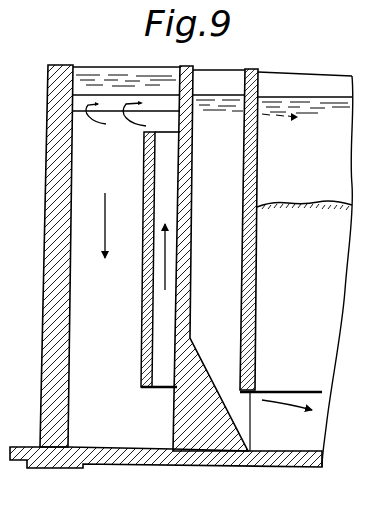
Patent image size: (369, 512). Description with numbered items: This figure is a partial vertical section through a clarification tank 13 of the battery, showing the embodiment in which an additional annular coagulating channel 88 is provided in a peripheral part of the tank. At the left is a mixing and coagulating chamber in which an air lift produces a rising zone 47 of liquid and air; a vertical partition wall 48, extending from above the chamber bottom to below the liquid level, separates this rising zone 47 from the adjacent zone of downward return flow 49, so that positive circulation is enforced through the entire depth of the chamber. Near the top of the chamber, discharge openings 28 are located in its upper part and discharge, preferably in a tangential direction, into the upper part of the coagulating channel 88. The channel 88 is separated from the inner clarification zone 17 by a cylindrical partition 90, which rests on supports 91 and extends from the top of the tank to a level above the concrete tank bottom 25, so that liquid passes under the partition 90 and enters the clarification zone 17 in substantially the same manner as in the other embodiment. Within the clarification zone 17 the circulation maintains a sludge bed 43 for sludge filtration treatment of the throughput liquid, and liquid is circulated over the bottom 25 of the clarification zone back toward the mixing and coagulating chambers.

The clarification tank 13 is at (302, 73).
The discharge openings 28 is at (143, 107).
The sludge bed 43 is at (300, 203).
The annular coagulating channel 88 is at (228, 238).
The cylindrical partition 90 is at (258, 247).
The clarification zone 17 is at (320, 285).
The zone of downward return flow 49 is at (113, 298).
The partition wall 48 is at (145, 329).
The rising zone 47 is at (163, 342).
The supports 91 is at (250, 421).
The tank bottom 25 is at (287, 462).